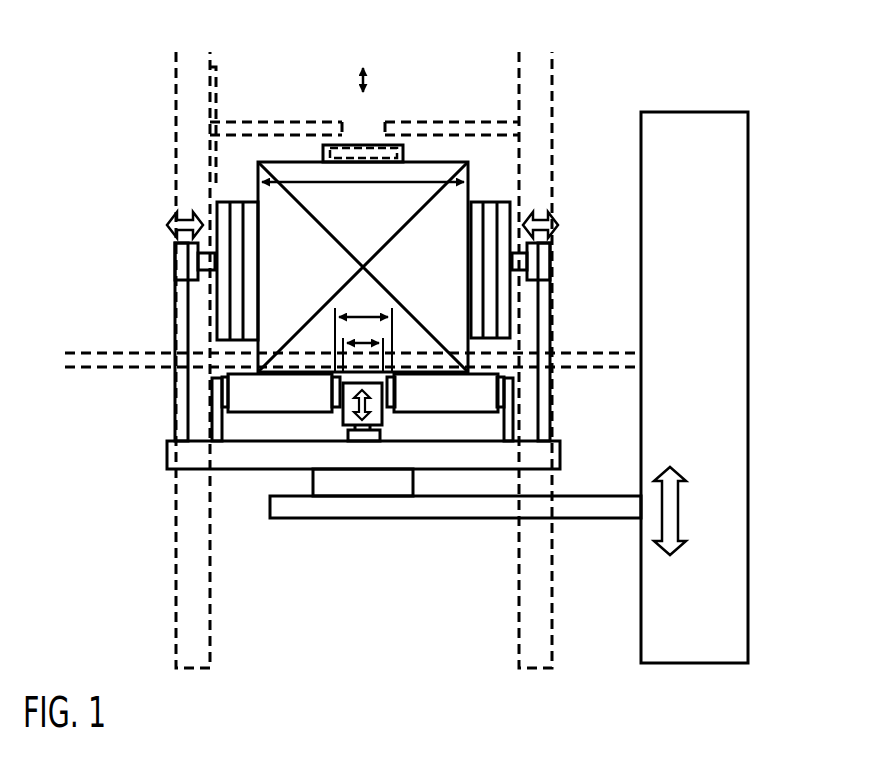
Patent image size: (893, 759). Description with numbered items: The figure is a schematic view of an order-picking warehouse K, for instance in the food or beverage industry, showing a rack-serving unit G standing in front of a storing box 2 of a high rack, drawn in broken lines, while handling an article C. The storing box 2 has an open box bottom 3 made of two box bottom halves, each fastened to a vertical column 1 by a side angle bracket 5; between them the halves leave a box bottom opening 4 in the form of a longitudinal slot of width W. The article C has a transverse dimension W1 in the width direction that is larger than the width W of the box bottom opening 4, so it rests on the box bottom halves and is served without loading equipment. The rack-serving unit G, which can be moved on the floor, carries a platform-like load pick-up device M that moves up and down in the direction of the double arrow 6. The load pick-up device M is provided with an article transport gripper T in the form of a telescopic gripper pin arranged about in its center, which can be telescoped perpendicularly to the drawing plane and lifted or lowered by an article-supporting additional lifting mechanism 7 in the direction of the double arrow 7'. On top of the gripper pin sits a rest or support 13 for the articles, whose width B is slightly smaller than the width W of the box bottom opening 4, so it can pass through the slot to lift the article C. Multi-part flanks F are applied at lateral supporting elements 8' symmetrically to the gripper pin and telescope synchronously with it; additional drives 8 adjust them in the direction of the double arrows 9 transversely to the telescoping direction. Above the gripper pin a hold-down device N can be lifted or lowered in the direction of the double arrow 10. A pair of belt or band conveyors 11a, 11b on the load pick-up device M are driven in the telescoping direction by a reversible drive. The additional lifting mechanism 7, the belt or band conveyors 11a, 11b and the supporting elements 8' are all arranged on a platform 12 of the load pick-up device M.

The vertical column 1 is at (552, 85).
The storing box 2 is at (478, 146).
The open box bottom 3 is at (428, 128).
The box bottom opening 4 is at (350, 127).
The side angle bracket 5 is at (213, 87).
The double arrow 6 is at (641, 528).
The additional lifting mechanism 7 is at (364, 495).
The double arrow 7' is at (390, 401).
The additional drive 8 is at (176, 326).
The lateral supporting element 8' is at (324, 409).
The double arrow 9 is at (545, 212).
The double arrow 10 is at (360, 74).
The belt or band conveyor 11a is at (262, 403).
The belt or band conveyor 11b is at (457, 402).
The platform 12 is at (560, 455).
The rest or support 13 is at (368, 383).
The flank F is at (233, 215).
The article C is at (284, 283).
The hold-down device N is at (363, 142).
The load pick-up device M is at (157, 456).
The article transport gripper T is at (343, 421).
The rack-serving unit G is at (332, 430).
The order-picking warehouse K is at (770, 314).
The width W is at (363, 330).
The transverse dimension W1 is at (363, 197).
The width B is at (363, 343).